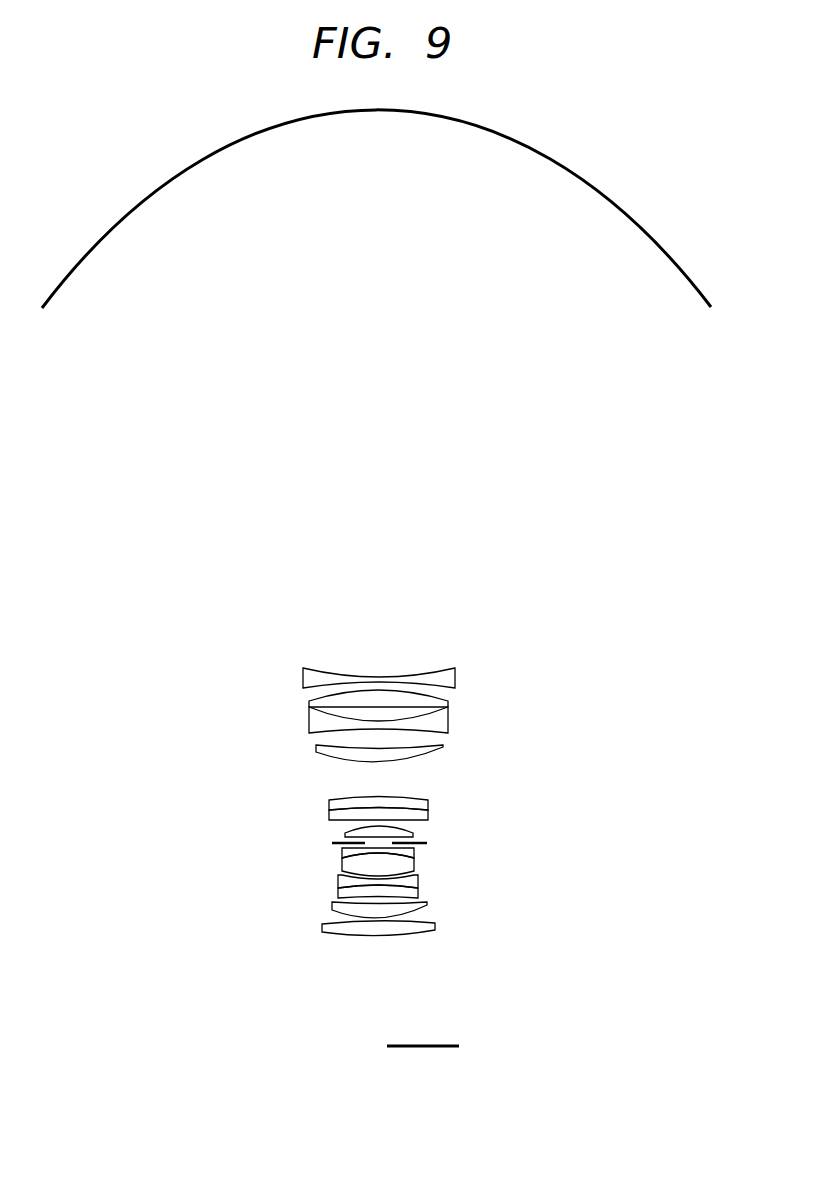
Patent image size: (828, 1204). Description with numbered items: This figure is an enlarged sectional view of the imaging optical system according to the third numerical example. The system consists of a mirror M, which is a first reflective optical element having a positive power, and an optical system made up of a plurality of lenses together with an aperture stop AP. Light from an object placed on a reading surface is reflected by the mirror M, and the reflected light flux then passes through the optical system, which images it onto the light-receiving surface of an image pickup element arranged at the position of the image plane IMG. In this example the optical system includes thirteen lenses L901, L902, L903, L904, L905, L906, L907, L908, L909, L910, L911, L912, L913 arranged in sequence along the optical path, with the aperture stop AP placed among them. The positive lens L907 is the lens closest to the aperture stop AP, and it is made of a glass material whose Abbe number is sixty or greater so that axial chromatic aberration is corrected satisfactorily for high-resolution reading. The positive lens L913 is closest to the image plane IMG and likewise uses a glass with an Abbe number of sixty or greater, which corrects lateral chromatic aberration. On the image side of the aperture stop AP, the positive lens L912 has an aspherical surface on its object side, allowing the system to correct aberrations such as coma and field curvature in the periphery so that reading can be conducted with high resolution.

The mirror M is at (152, 193).
The lens L901 is at (303, 678).
The lens L902 is at (311, 700).
The lens L903 is at (318, 723).
The lens L904 is at (320, 753).
The lens L905 is at (428, 803).
The lens L906 is at (428, 815).
The positive lens L907 is at (413, 833).
The aperture stop AP is at (426, 843).
The lens L908 is at (342, 855).
The lens L909 is at (342, 866).
The lens L910 is at (338, 886).
The lens L911 is at (338, 896).
The lens L912 is at (333, 908).
The positive lens L913 is at (332, 931).
The image plane IMG is at (437, 1046).